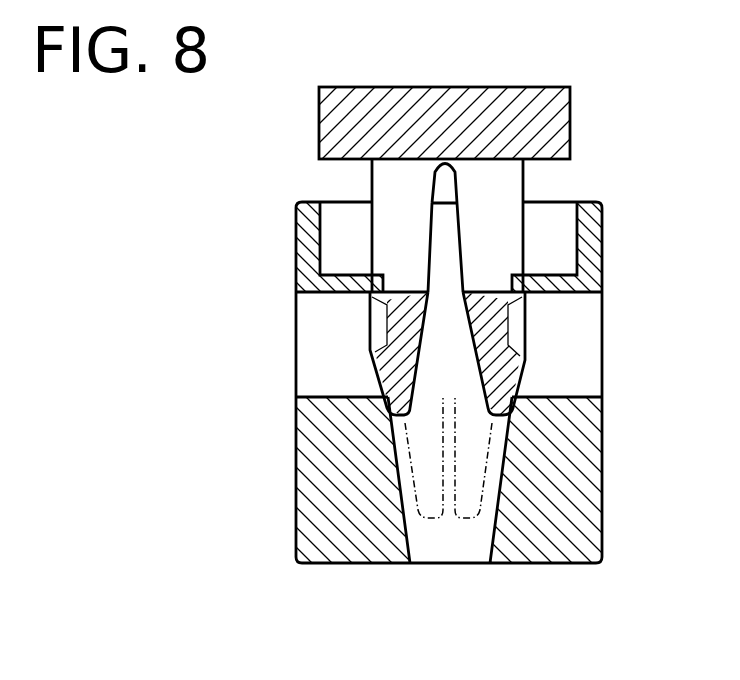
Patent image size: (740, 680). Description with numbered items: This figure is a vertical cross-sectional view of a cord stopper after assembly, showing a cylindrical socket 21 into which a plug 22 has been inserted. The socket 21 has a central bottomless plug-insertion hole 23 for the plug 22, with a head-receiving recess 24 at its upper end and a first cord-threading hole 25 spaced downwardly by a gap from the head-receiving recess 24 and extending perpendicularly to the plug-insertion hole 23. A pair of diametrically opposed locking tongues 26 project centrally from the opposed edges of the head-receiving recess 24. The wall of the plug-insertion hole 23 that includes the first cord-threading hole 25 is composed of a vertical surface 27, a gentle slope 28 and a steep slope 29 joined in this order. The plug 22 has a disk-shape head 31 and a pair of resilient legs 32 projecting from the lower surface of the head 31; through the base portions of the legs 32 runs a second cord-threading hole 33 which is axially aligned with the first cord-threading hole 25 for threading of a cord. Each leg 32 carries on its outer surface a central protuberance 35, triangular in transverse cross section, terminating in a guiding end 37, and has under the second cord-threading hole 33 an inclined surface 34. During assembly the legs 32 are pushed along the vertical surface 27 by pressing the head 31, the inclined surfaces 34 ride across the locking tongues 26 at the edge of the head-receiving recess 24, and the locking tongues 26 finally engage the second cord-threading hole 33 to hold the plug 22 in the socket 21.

The socket 21 is at (340, 564).
The plug 22 is at (572, 109).
The plug-insertion hole 23 is at (452, 548).
The head-receiving recess 24 is at (342, 237).
The first cord-threading hole 25 is at (323, 361).
The locking tongue 26 is at (514, 289).
The vertical surface 27 is at (369, 329).
The gentle slope 28 is at (313, 397).
The steep slope 29 is at (400, 493).
The head 31 is at (427, 117).
The resilient leg 32 is at (371, 183).
The second cord-threading hole 33 is at (503, 188).
The inclined surface 34 is at (526, 301).
The protuberance 35 is at (523, 346).
The guiding end 37 is at (510, 428).